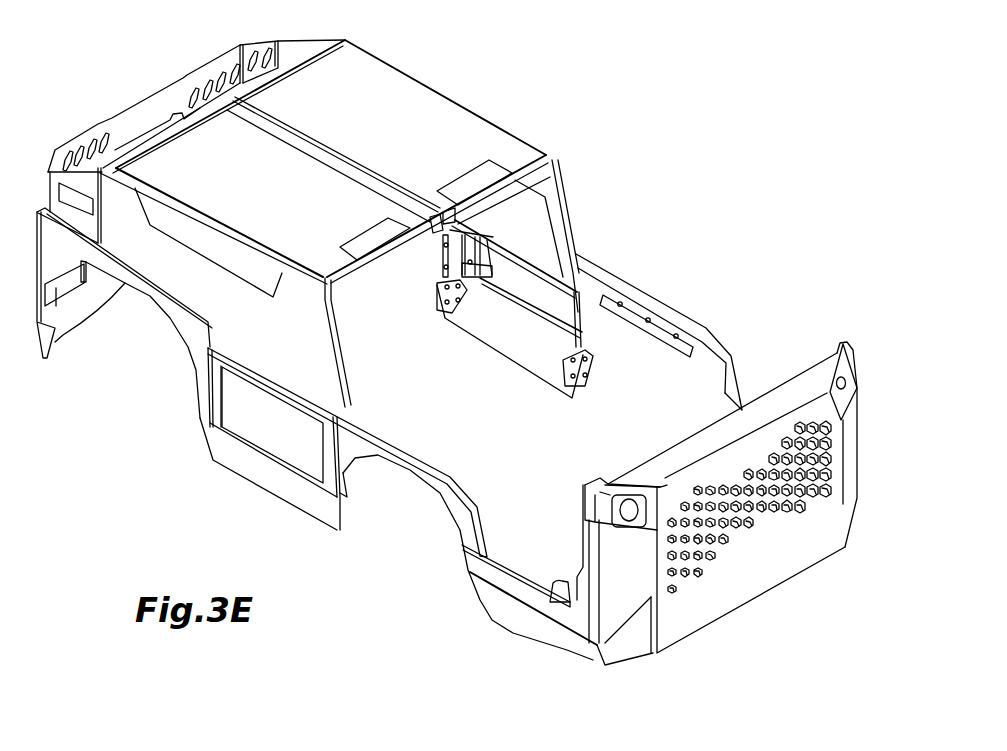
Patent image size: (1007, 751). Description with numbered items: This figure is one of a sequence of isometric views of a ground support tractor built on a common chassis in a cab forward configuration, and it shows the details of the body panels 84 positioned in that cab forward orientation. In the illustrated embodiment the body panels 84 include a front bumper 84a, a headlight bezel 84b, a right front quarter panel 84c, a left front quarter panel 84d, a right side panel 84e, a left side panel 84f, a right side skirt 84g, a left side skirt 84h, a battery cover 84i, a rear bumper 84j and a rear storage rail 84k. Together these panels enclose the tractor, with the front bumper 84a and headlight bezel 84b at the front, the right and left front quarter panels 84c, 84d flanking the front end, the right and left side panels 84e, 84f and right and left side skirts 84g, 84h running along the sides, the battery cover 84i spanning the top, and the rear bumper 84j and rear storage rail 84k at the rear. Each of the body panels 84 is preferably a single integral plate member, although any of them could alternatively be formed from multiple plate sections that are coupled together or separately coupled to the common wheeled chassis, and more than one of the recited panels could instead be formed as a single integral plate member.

The body panels 84 is at (462, 99).
The front bumper 84a is at (738, 582).
The headlight bezel 84b is at (814, 372).
The right front quarter panel 84c is at (570, 617).
The left front quarter panel 84d is at (850, 378).
The right side panel 84e is at (413, 468).
The left side panel 84f is at (628, 293).
The right side skirt 84g is at (258, 477).
The left side skirt 84h is at (502, 343).
The battery cover 84i is at (417, 108).
The rear bumper 84j is at (76, 315).
The rear storage rail 84k is at (152, 113).